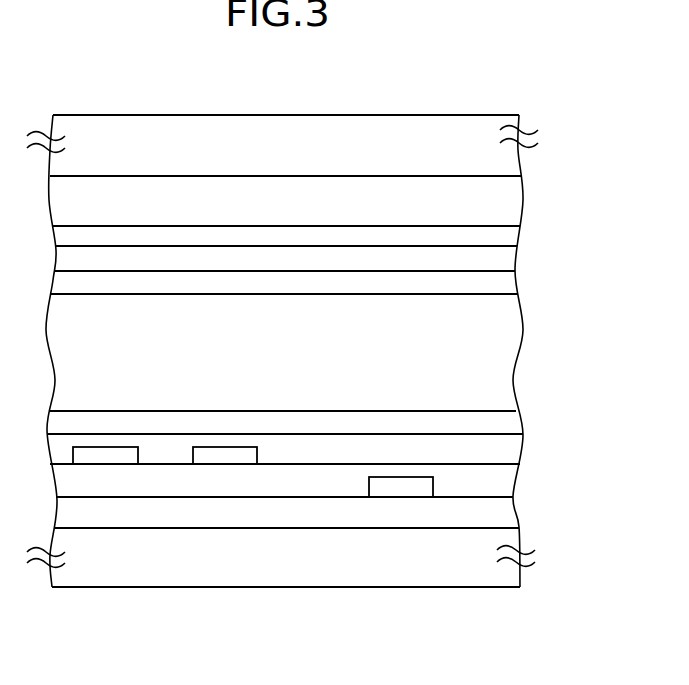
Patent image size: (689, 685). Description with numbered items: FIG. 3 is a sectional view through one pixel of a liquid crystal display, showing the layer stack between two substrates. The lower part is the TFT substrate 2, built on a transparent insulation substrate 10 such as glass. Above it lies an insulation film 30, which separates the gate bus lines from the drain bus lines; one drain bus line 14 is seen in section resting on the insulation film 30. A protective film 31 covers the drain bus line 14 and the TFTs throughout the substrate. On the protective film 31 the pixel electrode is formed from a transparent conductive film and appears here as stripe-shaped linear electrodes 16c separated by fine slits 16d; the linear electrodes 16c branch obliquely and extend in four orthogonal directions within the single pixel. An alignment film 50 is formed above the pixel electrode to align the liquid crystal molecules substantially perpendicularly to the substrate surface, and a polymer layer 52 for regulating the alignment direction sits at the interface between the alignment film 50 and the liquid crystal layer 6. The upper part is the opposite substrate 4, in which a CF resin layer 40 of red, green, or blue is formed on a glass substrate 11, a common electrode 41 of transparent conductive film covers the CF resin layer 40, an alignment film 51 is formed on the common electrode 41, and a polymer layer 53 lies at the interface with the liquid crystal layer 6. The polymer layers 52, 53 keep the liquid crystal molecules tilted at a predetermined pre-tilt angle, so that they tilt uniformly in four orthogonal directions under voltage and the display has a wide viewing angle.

The opposite substrate 4 is at (432, 113).
The glass substrate 11 is at (505, 158).
The CF resin layer 40 is at (505, 200).
The common electrode 41 is at (505, 237).
The alignment film 51 is at (505, 260).
The polymer layer 53 is at (505, 282).
The liquid crystal layer 6 is at (505, 353).
The polymer layer 52 is at (505, 424).
The alignment film 50 is at (505, 448).
The protective film 31 is at (505, 480).
The insulation film 30 is at (505, 506).
The transparent insulation substrate 10 is at (505, 538).
The TFT substrate 2 is at (430, 597).
The linear electrode 16c is at (108, 455).
The fine slit 16d is at (158, 452).
The drain bus line 14 is at (402, 490).